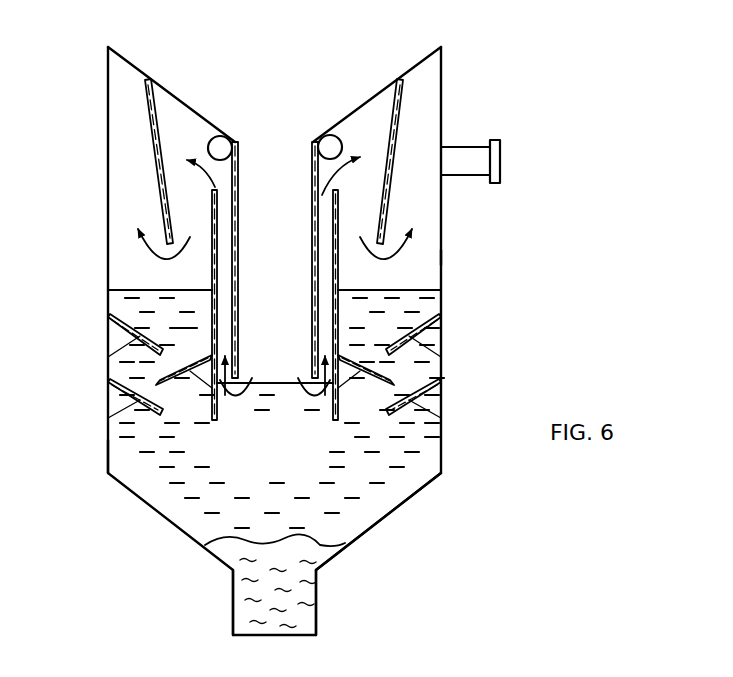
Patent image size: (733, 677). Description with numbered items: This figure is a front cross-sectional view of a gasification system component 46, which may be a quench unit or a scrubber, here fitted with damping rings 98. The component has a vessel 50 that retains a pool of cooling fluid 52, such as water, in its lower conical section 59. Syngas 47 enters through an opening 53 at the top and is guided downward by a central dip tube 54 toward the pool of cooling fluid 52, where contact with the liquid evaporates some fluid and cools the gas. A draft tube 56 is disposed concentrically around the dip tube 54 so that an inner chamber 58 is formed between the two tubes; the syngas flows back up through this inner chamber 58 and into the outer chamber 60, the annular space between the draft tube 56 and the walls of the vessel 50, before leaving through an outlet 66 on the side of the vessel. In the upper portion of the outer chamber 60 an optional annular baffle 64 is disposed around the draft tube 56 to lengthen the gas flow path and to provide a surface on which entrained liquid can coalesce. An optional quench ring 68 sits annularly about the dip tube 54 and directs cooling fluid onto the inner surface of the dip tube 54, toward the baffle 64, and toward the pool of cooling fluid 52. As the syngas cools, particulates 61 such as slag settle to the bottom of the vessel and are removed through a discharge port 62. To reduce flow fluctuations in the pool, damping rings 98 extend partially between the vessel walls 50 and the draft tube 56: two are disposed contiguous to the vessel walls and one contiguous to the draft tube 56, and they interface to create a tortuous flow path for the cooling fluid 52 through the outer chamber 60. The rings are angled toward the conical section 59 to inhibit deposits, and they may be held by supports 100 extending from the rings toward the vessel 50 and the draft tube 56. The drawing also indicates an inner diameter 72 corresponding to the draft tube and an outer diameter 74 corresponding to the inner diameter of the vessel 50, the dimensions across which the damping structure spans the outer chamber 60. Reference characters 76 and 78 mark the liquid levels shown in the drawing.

The gasification system component 46 is at (490, 37).
The syngas 47 is at (278, 167).
The vessel 50 is at (442, 213).
The cooling fluid 52 is at (115, 459).
The opening 53 is at (258, 145).
The dip tube 54 is at (212, 309).
The draft tube 56 is at (210, 263).
The inner chamber 58 is at (321, 253).
The conical section 59 is at (387, 513).
The outer chamber 60 is at (431, 257).
The particulates 61 is at (243, 597).
The discharge port 62 is at (317, 599).
The annular baffle 64 is at (399, 128).
The outlet 66 is at (498, 146).
The quench ring 68 is at (342, 138).
The inner diameter 72 is at (212, 422).
The outer diameter 74 is at (108, 643).
The liquid level 76 is at (118, 290).
The channel liquid level 78 is at (283, 379).
The damping rings 98 is at (108, 357).
The supports 100 is at (130, 392).